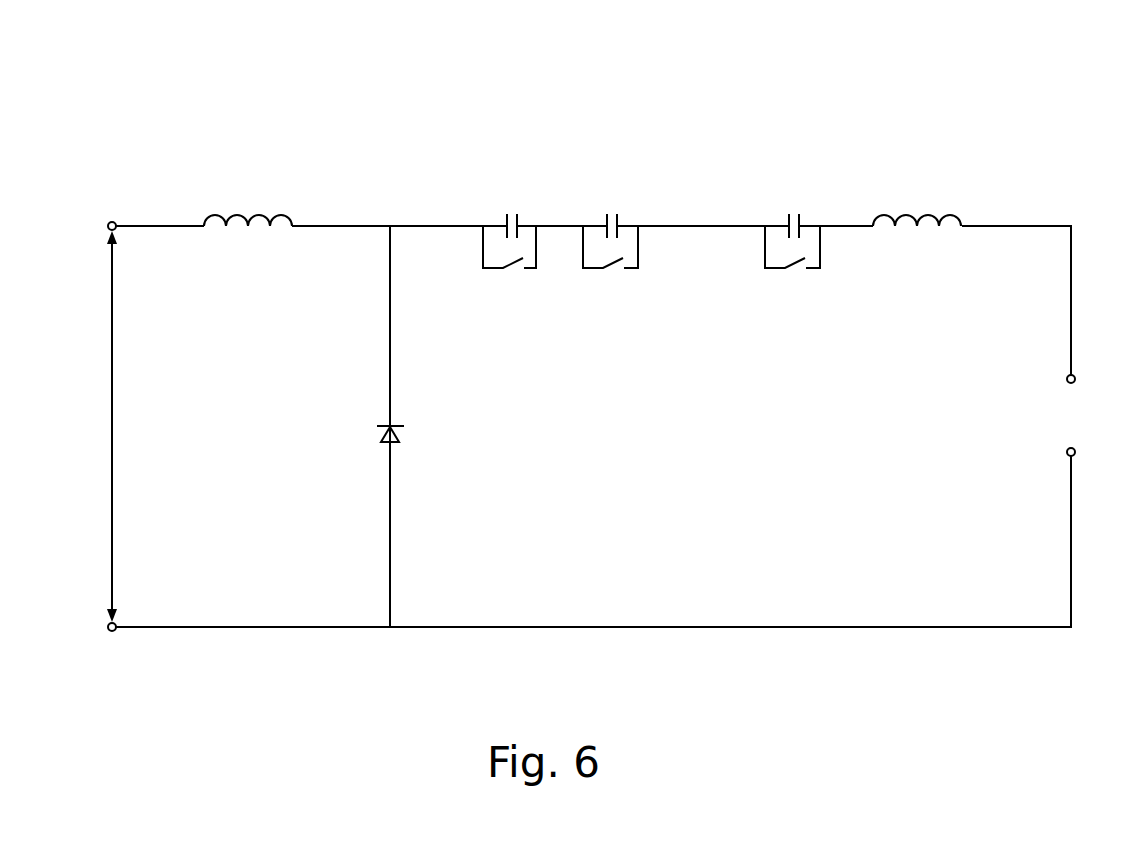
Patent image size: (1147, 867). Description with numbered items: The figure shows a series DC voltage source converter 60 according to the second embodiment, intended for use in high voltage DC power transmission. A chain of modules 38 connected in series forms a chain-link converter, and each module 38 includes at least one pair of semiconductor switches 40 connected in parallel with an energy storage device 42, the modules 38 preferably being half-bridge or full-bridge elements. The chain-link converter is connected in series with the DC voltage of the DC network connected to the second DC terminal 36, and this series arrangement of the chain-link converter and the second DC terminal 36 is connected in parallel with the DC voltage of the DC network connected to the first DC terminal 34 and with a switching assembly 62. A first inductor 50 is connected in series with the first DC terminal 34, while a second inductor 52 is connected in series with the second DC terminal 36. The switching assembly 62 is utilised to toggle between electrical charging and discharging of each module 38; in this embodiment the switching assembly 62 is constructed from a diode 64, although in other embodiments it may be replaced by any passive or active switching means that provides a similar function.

The first DC terminal 34 is at (75, 421).
The second DC terminal 36 is at (1083, 410).
The module 38 is at (784, 292).
The semiconductor switch 40 is at (508, 272).
The energy storage device 42 is at (509, 212).
The first inductor 50 is at (250, 210).
The second inductor 52 is at (940, 212).
The series DC voltage source converter 60 is at (551, 106).
The switching assembly 62 is at (354, 398).
The diode 64 is at (380, 435).